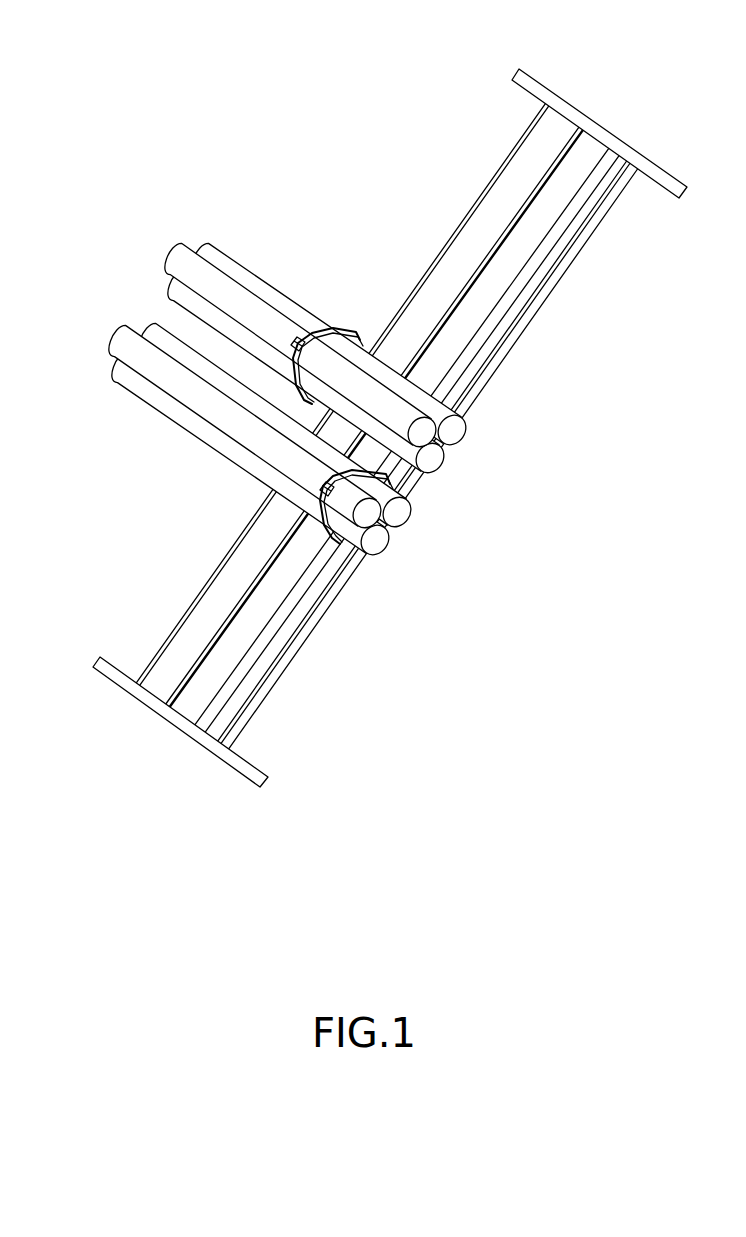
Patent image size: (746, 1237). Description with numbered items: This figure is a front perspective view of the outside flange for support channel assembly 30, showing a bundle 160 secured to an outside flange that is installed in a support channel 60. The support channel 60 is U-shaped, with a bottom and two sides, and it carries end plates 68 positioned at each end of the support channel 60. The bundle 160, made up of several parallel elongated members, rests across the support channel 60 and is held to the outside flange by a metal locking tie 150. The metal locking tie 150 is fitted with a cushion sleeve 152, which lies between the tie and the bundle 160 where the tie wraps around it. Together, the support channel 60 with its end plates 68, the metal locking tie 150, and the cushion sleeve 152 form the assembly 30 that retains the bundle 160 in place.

The outside flange for support channel assembly 30 is at (146, 460).
The support channel 60 is at (583, 256).
The end plates 68 is at (545, 96).
The metal locking tie 150 is at (294, 343).
The cushion sleeve 152 is at (330, 329).
The bundle 160 is at (238, 268).